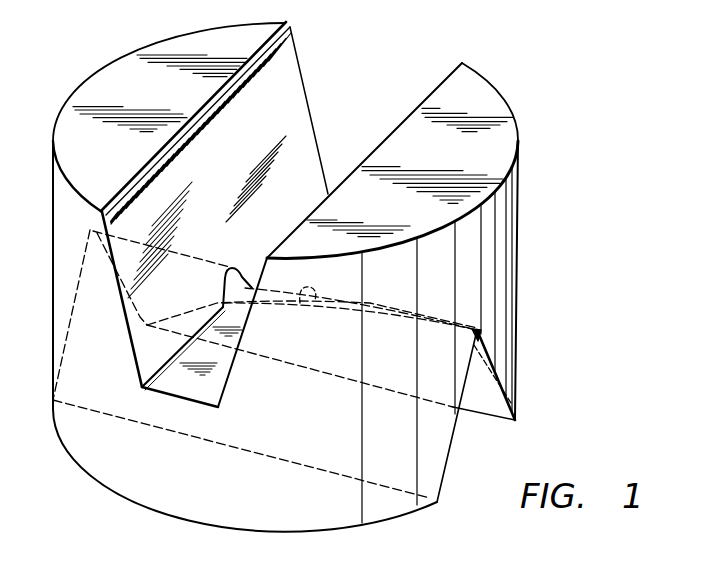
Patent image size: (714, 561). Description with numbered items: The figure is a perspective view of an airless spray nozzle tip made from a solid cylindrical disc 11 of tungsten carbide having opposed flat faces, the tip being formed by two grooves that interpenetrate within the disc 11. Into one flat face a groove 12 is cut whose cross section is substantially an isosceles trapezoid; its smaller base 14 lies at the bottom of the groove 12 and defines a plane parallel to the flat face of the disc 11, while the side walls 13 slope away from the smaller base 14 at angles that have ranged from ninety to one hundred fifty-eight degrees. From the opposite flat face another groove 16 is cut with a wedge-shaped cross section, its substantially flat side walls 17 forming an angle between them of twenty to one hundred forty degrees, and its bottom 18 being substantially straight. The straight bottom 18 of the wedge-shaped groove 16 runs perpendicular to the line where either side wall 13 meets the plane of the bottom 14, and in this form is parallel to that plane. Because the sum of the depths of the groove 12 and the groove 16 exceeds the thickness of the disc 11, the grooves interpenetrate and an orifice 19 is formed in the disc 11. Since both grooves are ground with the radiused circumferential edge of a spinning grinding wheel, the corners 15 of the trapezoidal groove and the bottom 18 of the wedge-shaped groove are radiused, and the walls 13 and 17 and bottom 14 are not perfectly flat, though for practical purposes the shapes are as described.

The disc 11 is at (87, 88).
The trapezoidal groove 12 is at (377, 63).
The side walls 13 is at (297, 125).
The smaller base 14 is at (185, 382).
The corners 15 is at (142, 386).
The wedge-shaped groove 16 is at (477, 437).
The side walls 17 is at (489, 380).
The bottom 18 is at (478, 325).
The orifice 19 is at (246, 268).